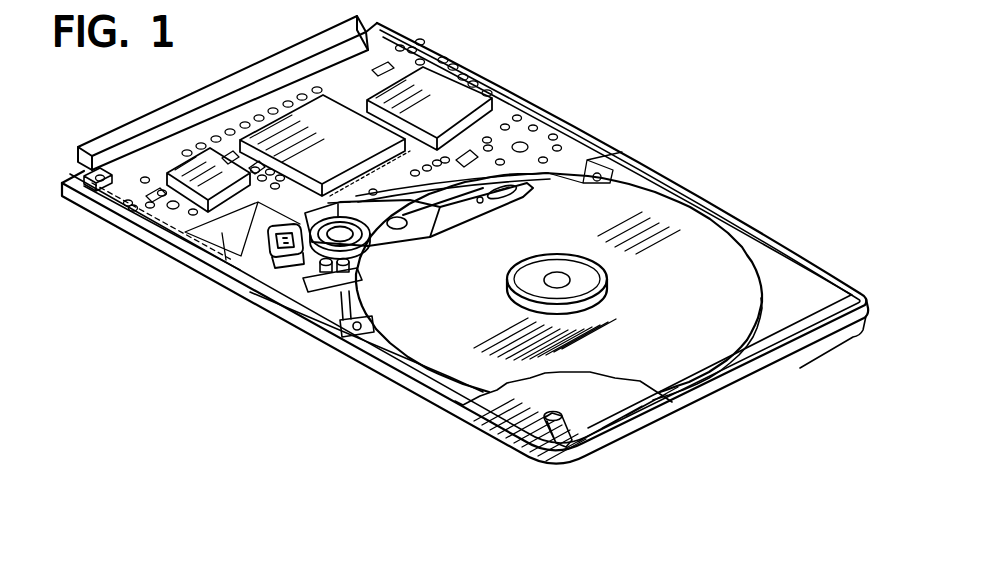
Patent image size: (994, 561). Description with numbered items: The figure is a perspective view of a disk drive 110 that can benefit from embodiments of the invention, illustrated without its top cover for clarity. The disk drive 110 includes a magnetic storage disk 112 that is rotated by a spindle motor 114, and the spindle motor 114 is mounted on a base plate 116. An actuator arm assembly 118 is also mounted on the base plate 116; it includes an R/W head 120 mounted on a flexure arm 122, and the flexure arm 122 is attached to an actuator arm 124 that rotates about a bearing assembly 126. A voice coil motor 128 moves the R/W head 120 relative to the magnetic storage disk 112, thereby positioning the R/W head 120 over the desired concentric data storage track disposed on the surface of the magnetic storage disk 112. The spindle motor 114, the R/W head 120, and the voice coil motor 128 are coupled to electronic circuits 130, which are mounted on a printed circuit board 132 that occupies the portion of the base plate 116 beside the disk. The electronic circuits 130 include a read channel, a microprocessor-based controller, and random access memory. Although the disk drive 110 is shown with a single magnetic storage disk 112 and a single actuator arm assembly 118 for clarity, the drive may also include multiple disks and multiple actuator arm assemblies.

The disk drive 110 is at (604, 118).
The magnetic storage disk 112 is at (735, 245).
The spindle motor 114 is at (590, 287).
The base plate 116 is at (776, 277).
The actuator arm assembly 118 is at (497, 219).
The R/W head 120 is at (537, 188).
The flexure arm 122 is at (446, 227).
The actuator arm 124 is at (367, 253).
The bearing assembly 126 is at (370, 266).
The voice coil motor 128 is at (276, 262).
The electronic circuits 130 is at (237, 185).
The printed circuit board 132 is at (347, 82).